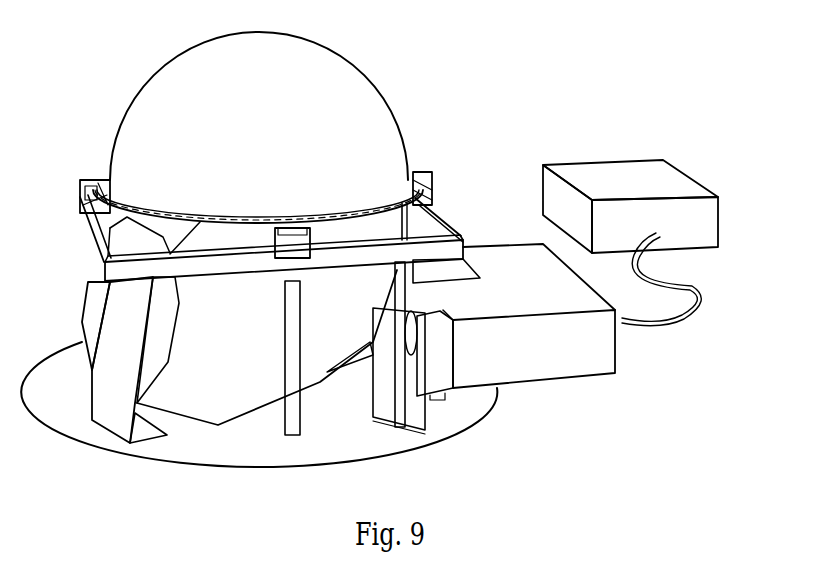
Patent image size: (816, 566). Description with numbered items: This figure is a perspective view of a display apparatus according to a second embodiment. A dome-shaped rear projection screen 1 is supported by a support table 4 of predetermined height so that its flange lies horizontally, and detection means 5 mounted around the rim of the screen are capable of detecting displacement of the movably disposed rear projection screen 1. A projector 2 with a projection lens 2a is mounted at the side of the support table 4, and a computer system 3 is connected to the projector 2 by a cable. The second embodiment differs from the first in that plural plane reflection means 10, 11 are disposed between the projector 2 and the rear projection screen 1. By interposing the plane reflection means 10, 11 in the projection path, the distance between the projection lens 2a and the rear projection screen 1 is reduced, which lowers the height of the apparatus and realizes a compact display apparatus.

The rear projection screen 1 is at (384, 94).
The projector 2 is at (606, 349).
The projection lens 2a is at (397, 351).
The computer system 3 is at (610, 166).
The support table 4 is at (92, 239).
The detection means 5 is at (81, 188).
The plane reflection means 10 is at (88, 289).
The plane reflection means 11 is at (245, 404).